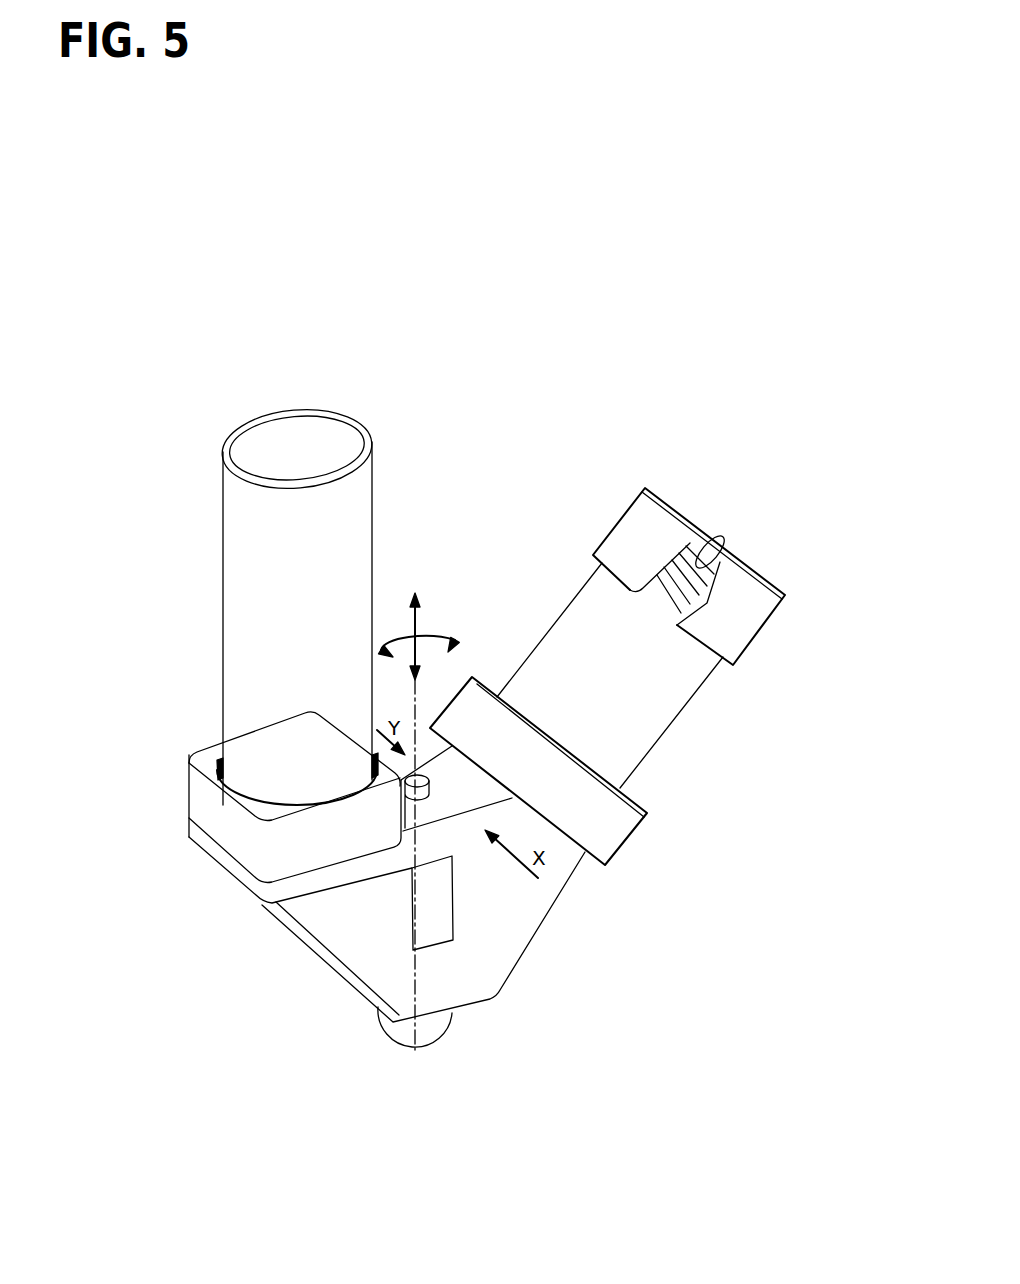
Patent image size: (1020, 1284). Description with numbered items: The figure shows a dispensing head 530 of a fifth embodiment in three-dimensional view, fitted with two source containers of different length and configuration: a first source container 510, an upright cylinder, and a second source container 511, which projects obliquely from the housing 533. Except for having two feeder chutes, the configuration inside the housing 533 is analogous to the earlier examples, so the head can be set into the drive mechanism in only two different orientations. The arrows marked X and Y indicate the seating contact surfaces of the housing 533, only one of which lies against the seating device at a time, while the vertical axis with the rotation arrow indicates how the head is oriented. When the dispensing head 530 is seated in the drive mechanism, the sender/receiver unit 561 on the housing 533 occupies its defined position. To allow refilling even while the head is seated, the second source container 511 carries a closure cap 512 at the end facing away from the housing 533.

The first source container 510 is at (288, 610).
The second source container 511 is at (627, 698).
The closure cap 512 is at (727, 612).
The dispensing head 530 is at (670, 574).
The housing 533 is at (360, 930).
The sender/receiver unit 561 is at (430, 925).